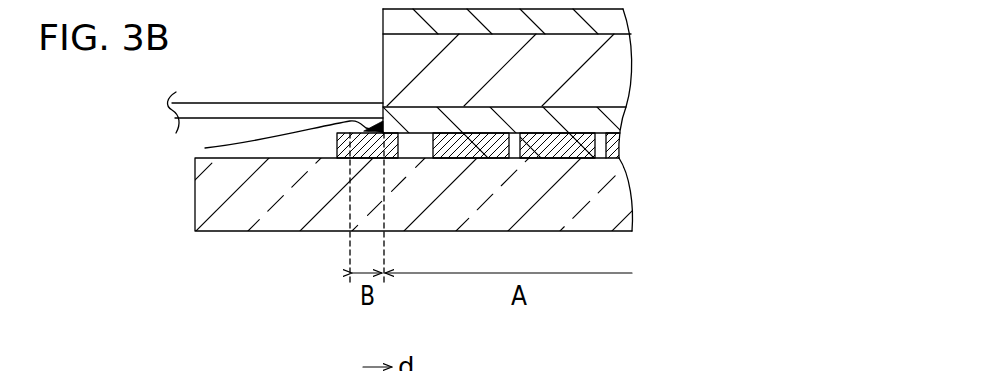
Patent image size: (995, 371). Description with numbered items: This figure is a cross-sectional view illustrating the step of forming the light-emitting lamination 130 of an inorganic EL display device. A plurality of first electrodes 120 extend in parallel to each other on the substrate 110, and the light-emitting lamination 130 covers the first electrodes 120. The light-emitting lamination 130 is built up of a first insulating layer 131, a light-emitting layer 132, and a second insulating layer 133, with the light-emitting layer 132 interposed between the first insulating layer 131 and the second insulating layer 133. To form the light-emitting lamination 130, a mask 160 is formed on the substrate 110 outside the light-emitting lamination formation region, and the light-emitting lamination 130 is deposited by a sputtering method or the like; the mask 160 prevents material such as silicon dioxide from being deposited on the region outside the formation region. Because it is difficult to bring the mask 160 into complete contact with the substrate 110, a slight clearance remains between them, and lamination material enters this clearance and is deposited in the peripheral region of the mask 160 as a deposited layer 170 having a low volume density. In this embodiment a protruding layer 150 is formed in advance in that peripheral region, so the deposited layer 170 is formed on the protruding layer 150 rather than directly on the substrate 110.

The substrate 110 is at (632, 197).
The first electrodes 120 is at (498, 207).
The light-emitting lamination 130 is at (598, 81).
The first insulating layer 131 is at (625, 118).
The light-emitting layer 132 is at (633, 62).
The second insulating layer 133 is at (626, 20).
The protruding layer 150 is at (337, 143).
The mask 160 is at (250, 103).
The deposited layer 170 is at (205, 148).